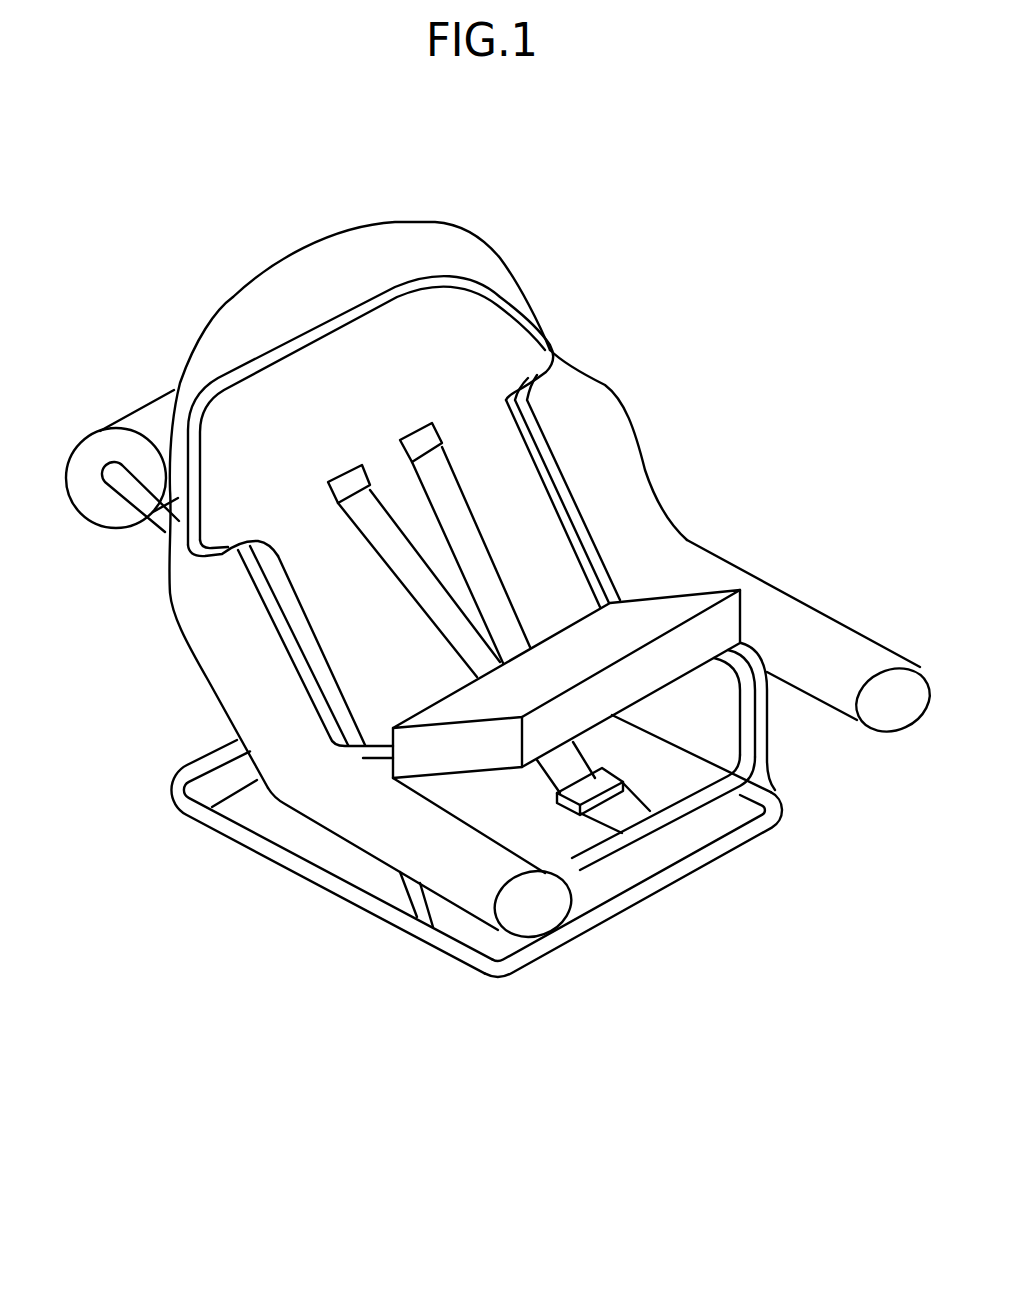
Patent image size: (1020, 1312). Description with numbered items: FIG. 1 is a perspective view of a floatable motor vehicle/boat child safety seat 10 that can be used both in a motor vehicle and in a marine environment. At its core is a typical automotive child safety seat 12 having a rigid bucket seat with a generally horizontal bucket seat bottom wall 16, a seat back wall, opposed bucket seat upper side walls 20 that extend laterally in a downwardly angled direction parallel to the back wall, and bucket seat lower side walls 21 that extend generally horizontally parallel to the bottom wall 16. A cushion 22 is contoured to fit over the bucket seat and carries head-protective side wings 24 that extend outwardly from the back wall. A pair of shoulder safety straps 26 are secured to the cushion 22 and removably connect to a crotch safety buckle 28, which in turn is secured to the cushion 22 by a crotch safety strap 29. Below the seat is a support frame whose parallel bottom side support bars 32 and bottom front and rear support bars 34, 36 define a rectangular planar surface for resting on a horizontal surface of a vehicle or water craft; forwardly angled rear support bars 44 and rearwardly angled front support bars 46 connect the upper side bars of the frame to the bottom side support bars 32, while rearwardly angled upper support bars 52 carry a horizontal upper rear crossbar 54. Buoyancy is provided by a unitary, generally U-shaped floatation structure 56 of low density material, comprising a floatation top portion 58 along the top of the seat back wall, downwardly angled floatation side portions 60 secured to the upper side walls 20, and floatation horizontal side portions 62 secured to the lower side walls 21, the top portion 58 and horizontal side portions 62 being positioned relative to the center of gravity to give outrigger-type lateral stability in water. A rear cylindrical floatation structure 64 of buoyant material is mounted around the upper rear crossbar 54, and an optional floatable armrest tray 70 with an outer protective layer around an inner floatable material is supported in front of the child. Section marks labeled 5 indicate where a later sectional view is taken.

The floatable motor vehicle/boat child safety seat 10 is at (546, 229).
The automotive child safety seat 12 is at (785, 754).
The bucket seat bottom wall 16 is at (700, 803).
The bucket seat upper side walls 20 is at (297, 637).
The bucket seat lower side walls 21 is at (768, 698).
The cushion 22 is at (604, 843).
The head-protective side wings 24 is at (490, 340).
The shoulder safety straps 26 is at (440, 497).
The crotch safety buckle 28 is at (606, 780).
The crotch safety strap 29 is at (637, 808).
The bottom side support bars 32 is at (357, 897).
The bottom front support bar 34 is at (687, 867).
The bottom rear support bar 36 is at (217, 760).
The forwardly angled rear support bars 44 is at (238, 790).
The rearwardly angled front support bars 46 is at (386, 888).
The rearwardly angled upper support bars 52 is at (143, 513).
The horizontal upper rear crossbar 54 is at (117, 480).
The floatation structure 56 is at (238, 293).
The floatation top portion 58 is at (317, 263).
The downwardly angled floatation side portions 60 is at (200, 597).
The floatation horizontal side portions 62 is at (475, 880).
The rear cylindrical floatation structure 64 is at (145, 417).
The floatable armrest tray 70 is at (508, 689).
The section line of FIG. 5 is at (110, 868).